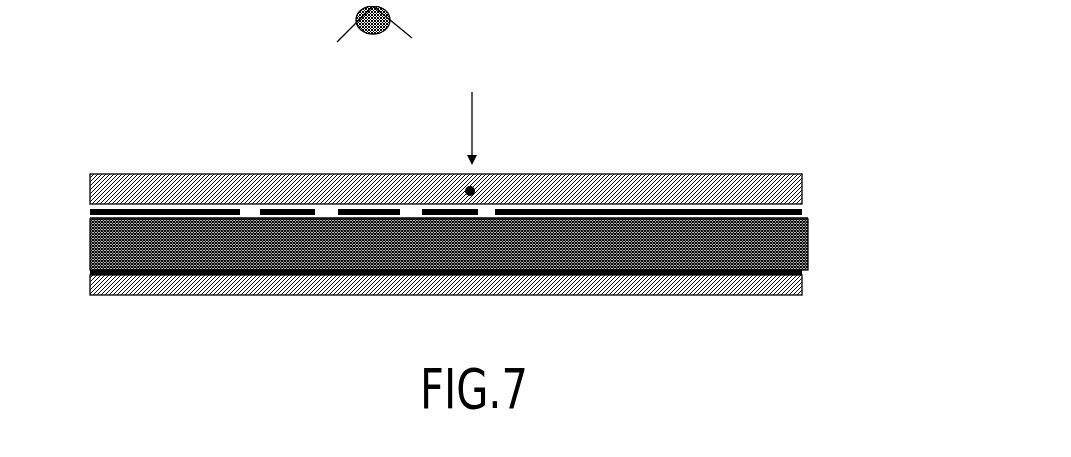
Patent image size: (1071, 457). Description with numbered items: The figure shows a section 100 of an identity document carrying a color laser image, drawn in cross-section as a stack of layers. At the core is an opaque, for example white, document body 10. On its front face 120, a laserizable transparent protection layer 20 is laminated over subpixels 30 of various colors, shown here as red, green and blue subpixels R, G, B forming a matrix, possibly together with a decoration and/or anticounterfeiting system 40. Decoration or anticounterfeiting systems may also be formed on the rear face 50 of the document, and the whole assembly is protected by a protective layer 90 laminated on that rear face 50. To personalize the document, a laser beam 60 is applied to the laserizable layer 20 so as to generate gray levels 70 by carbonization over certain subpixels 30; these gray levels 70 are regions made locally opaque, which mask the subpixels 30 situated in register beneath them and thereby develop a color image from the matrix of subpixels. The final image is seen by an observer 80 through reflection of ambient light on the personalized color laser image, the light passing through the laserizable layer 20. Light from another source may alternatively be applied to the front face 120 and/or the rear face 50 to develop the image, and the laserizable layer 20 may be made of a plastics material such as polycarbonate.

The document body 10 is at (180, 240).
The laserizable transparent protection layer 20 is at (121, 186).
The subpixels 30 is at (246, 210).
The decoration and/or anticounterfeiting system 40 is at (712, 213).
The rear face 50 is at (712, 306).
The laser beam 60 is at (478, 113).
The gray levels 70 is at (475, 189).
The observer 80 is at (405, 12).
The protective layer 90 is at (302, 285).
The section of identity document 100 is at (823, 233).
The front face 120 is at (685, 162).
The red subpixel R is at (285, 207).
The green subpixel G is at (348, 207).
The blue subpixel B is at (440, 207).